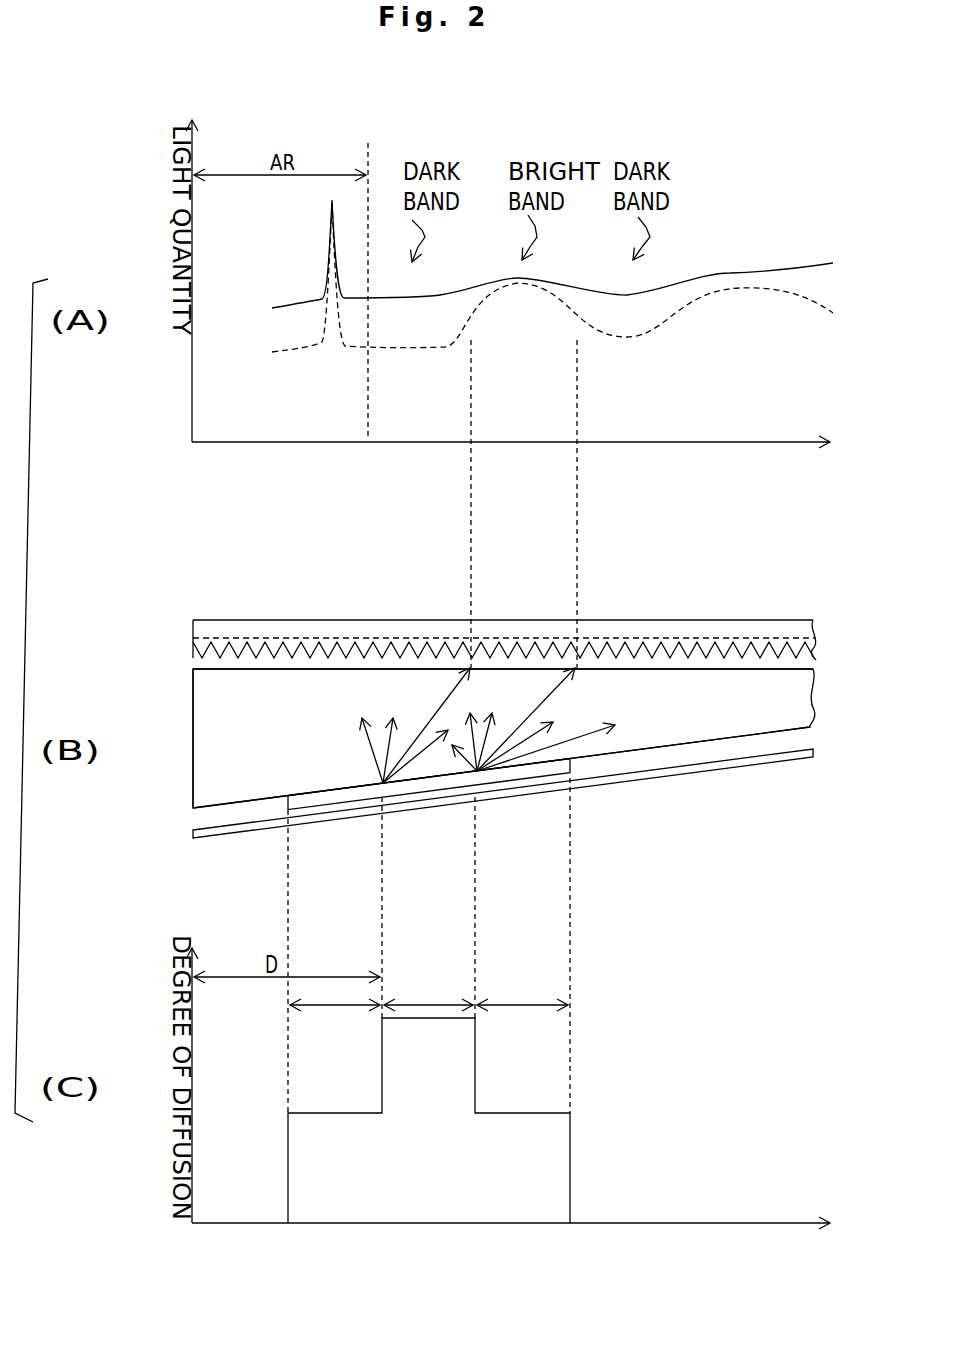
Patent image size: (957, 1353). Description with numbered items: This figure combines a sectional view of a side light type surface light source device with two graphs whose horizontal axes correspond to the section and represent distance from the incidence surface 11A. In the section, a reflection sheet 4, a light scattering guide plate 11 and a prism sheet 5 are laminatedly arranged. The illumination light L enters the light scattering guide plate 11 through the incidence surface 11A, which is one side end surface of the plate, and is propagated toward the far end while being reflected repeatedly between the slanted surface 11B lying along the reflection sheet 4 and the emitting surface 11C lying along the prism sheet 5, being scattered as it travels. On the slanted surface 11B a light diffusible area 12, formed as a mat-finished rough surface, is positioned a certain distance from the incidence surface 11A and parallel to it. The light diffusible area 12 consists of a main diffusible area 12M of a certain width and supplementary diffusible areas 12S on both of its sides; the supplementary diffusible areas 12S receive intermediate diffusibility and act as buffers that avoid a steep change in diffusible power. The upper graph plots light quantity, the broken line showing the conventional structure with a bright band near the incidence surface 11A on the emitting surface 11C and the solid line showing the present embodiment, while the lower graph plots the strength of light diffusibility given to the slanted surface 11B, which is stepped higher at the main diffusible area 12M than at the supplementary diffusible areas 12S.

The reflection sheet 4 is at (197, 833).
The prism sheet 5 is at (210, 632).
The light scattering guide plate 11 is at (210, 787).
The incidence surface 11A is at (193, 689).
The slanted surface 11B is at (708, 743).
The emitting surface 11C is at (728, 670).
The light diffusible area 12 is at (546, 800).
The main diffusible area 12M is at (428, 988).
The supplementary diffusible area 12S is at (429, 1008).
The illumination light L is at (543, 700).